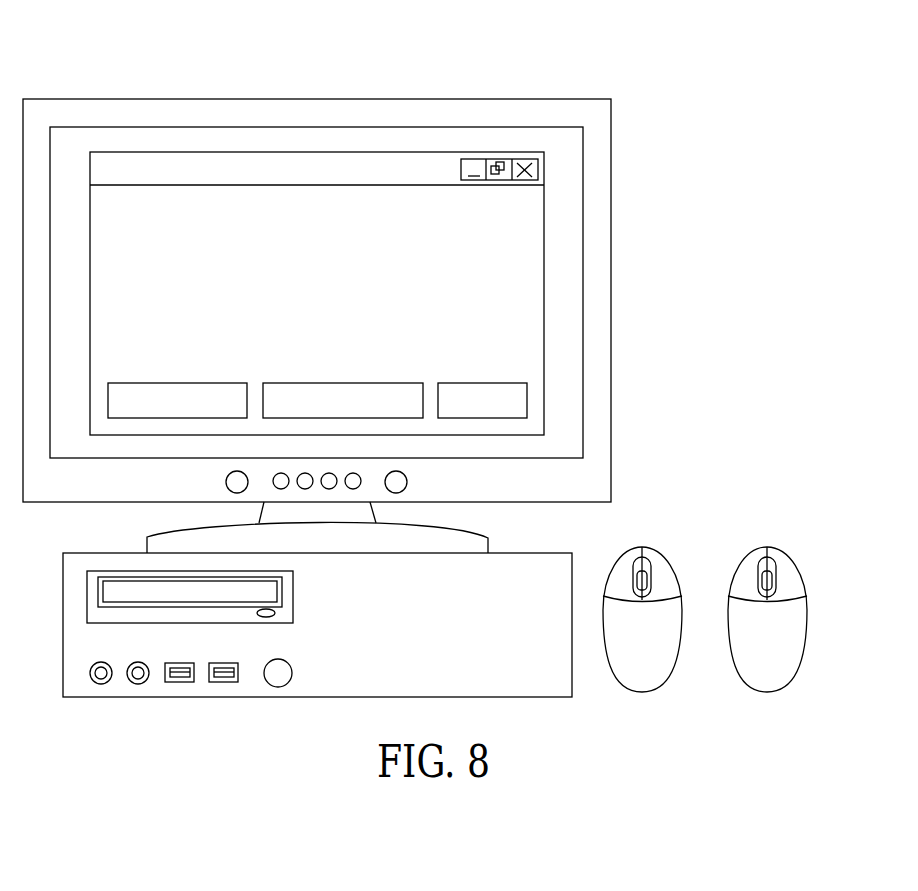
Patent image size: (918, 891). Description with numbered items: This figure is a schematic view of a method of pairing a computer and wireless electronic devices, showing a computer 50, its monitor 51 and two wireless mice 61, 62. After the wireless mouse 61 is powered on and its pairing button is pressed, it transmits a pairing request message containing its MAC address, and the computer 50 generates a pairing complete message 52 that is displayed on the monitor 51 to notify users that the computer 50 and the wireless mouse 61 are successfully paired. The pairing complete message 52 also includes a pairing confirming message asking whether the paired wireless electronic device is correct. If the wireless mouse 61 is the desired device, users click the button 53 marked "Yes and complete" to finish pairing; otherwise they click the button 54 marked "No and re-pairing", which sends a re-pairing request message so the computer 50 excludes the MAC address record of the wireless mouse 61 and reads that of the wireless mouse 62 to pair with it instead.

The computer 50 is at (107, 52).
The monitor 51 is at (493, 111).
The pairing complete message 52 is at (278, 152).
The button 53 is at (368, 383).
The button 54 is at (233, 383).
The wireless mouse 61 is at (667, 555).
The wireless mouse 62 is at (792, 555).